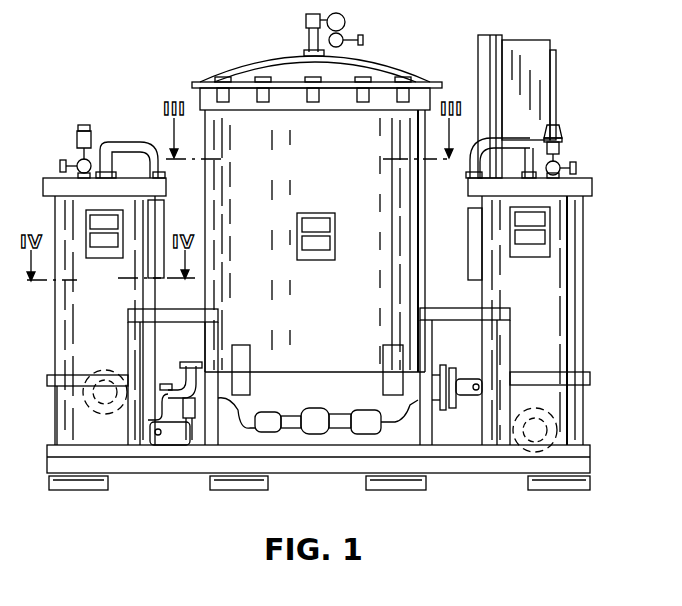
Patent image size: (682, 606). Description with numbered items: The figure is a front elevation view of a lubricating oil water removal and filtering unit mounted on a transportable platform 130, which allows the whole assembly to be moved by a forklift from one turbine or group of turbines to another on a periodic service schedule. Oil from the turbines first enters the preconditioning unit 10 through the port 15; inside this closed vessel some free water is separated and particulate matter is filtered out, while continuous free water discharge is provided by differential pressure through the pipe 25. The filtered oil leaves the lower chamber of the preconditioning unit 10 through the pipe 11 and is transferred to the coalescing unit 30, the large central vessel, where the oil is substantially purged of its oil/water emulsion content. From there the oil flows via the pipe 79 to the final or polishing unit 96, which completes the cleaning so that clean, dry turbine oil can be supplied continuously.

The preconditioning unit 10 is at (56, 340).
The pipe 11 is at (167, 437).
The port 15 is at (82, 412).
The pipe 25 is at (167, 395).
The coalescing unit 30 is at (375, 58).
The pipe 79 is at (470, 392).
The polishing unit 96 is at (586, 292).
The platform 130 is at (594, 460).